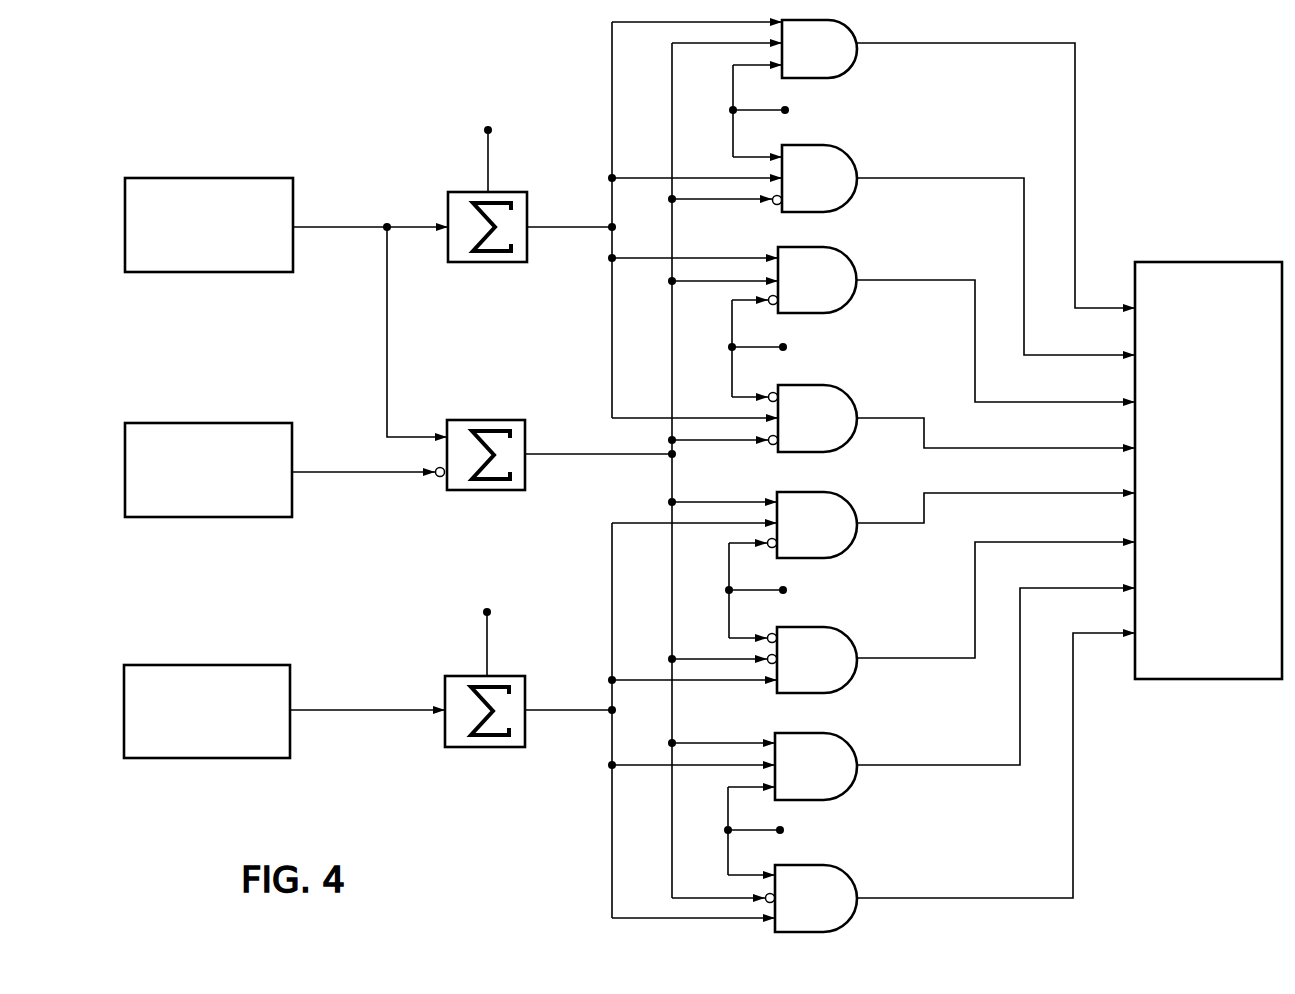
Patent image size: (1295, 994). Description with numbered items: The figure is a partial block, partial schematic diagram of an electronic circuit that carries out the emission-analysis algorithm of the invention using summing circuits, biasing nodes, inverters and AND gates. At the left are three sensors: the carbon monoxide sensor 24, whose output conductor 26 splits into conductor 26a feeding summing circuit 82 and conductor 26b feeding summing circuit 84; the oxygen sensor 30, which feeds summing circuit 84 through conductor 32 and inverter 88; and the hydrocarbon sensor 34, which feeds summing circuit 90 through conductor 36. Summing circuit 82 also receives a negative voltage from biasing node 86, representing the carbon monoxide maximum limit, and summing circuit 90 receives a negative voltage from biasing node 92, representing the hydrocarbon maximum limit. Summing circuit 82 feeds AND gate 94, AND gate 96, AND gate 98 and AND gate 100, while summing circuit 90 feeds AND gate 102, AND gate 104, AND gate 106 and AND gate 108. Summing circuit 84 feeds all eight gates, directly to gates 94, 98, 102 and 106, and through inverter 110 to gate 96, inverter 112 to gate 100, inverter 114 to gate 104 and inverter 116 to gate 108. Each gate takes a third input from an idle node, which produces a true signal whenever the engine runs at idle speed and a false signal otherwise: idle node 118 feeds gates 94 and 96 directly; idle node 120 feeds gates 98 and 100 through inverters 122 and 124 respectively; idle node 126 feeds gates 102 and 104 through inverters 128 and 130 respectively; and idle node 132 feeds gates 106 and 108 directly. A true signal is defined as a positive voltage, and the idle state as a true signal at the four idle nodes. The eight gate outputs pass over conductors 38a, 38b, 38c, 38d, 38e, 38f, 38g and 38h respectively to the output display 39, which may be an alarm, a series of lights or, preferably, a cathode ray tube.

The carbon monoxide sensor 24 is at (235, 178).
The conductor 26 is at (330, 227).
The conductor 26a is at (417, 216).
The conductor 26b is at (417, 332).
The oxygen sensor 30 is at (232, 423).
The conductor 32 is at (318, 472).
The hydrocarbon sensor 34 is at (210, 665).
The conductor 36 is at (326, 710).
The conductor 38a is at (996, 175).
The conductor 38b is at (996, 267).
The conductor 38c is at (996, 341).
The conductor 38d is at (996, 434).
The conductor 38e is at (996, 499).
The conductor 38f is at (996, 590).
The conductor 38g is at (996, 667).
The conductor 38h is at (996, 757).
The output display 39 is at (1207, 262).
The summing circuit 82 is at (492, 262).
The summing circuit 84 is at (485, 420).
The biasing node 86 is at (488, 130).
The inverter 88 is at (434, 478).
The summing circuit 90 is at (498, 747).
The biasing node 92 is at (487, 612).
The AND gate 94 is at (819, 49).
The AND gate 96 is at (819, 178).
The AND gate 98 is at (817, 280).
The AND gate 100 is at (817, 418).
The AND gate 102 is at (817, 525).
The AND gate 104 is at (817, 660).
The AND gate 106 is at (816, 766).
The AND gate 108 is at (816, 898).
The inverter 110 is at (771, 206).
The inverter 112 is at (767, 446).
The inverter 114 is at (762, 656).
The inverter 116 is at (760, 895).
The idle node 118 is at (777, 111).
The idle node 120 is at (776, 348).
The inverter 122 is at (770, 306).
The inverter 124 is at (771, 391).
The idle node 126 is at (775, 590).
The inverter 128 is at (769, 549).
The inverter 130 is at (770, 633).
The idle node 132 is at (773, 831).